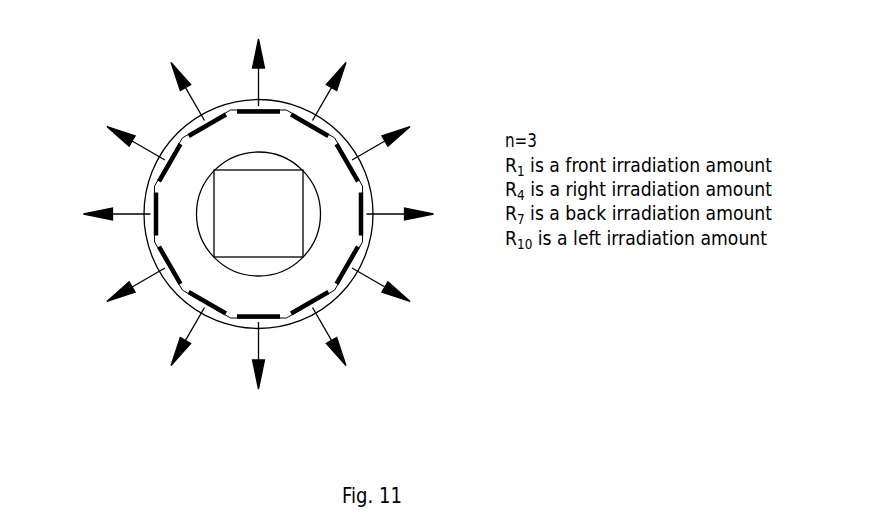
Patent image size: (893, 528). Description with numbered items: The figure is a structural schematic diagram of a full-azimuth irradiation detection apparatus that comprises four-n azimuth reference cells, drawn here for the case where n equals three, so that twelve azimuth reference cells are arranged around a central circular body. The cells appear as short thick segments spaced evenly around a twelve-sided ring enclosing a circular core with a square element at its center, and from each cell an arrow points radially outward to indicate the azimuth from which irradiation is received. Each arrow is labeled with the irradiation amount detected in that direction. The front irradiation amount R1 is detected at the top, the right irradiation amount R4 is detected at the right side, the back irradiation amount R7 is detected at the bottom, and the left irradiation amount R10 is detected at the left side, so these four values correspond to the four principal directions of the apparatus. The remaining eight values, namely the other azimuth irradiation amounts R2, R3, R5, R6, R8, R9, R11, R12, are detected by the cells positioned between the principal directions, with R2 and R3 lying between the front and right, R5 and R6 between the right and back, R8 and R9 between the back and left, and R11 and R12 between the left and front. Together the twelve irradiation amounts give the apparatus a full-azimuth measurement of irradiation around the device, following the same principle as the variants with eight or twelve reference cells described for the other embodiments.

The front irradiation amount R1 is at (258, 58).
The other azimuth irradiation amount R2 is at (342, 76).
The other azimuth irradiation amount R3 is at (396, 131).
The right irradiation amount R4 is at (416, 217).
The other azimuth irradiation amount R5 is at (396, 297).
The other azimuth irradiation amount R6 is at (342, 352).
The back irradiation amount R7 is at (258, 372).
The other azimuth irradiation amount R8 is at (174, 353).
The other azimuth irradiation amount R9 is at (119, 297).
The left irradiation amount R10 is at (96, 217).
The other azimuth irradiation amount R11 is at (119, 129).
The other azimuth irradiation amount R12 is at (174, 75).